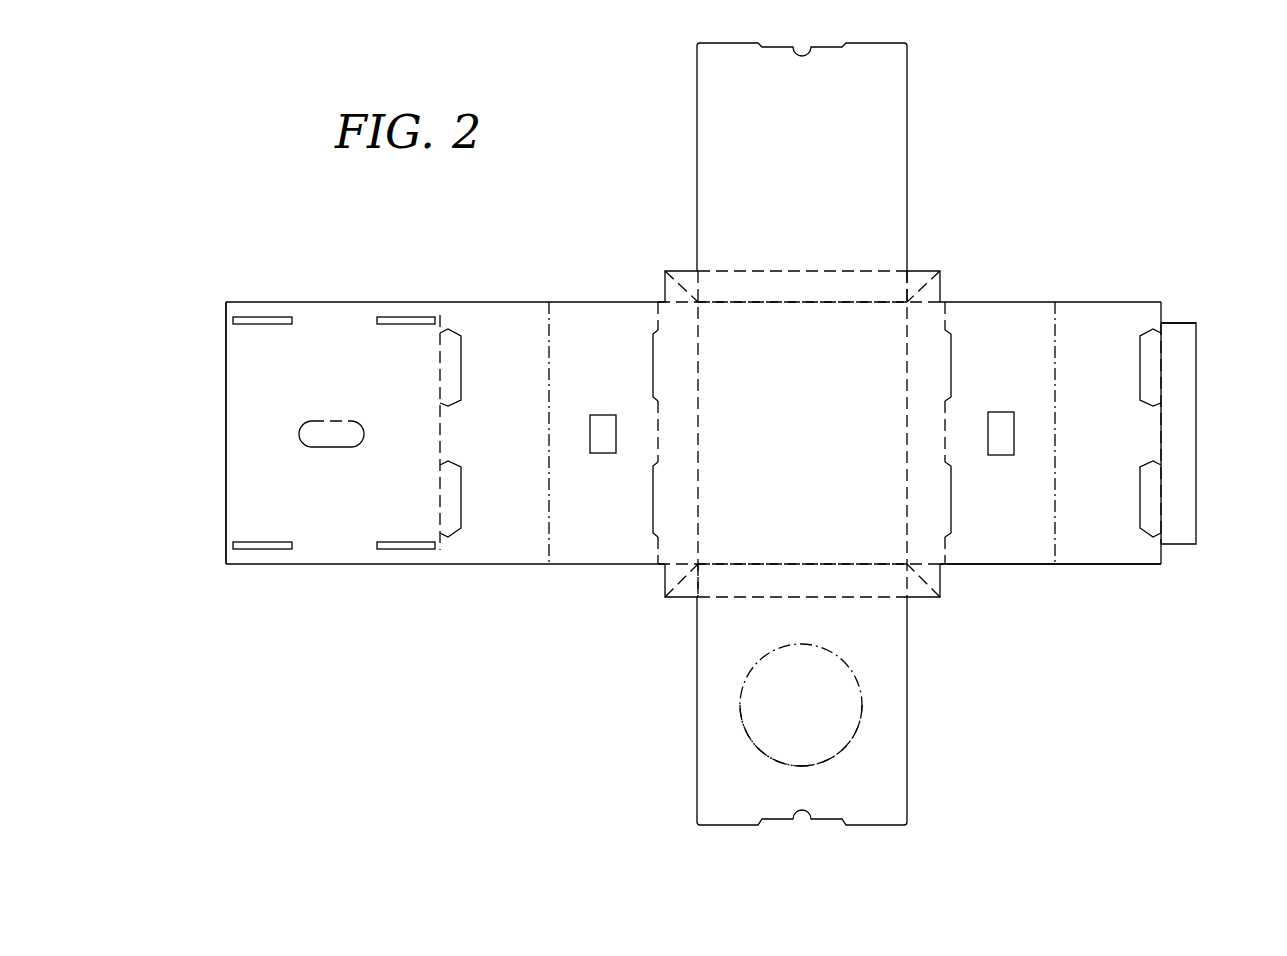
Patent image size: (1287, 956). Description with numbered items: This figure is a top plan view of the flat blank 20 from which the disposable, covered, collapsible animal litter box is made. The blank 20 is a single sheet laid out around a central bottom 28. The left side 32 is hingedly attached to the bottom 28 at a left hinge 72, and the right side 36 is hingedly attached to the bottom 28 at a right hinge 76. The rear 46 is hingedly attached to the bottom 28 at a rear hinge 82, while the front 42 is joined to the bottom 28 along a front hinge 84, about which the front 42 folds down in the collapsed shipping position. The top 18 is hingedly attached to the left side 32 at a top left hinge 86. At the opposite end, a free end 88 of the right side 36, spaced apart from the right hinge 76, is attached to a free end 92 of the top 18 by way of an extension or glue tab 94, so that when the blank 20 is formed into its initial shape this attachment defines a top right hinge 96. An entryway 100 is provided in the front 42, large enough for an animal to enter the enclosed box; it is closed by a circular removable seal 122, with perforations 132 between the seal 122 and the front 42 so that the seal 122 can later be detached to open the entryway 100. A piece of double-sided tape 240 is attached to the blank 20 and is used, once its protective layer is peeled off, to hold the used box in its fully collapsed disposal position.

The blank 20 is at (1072, 633).
The top 18 is at (272, 370).
The left side 32 is at (617, 330).
The right side 36 is at (1078, 330).
The bottom 28 is at (872, 533).
The rear 46 is at (882, 148).
The front 42 is at (722, 745).
The left hinge 72 is at (658, 538).
The right hinge 76 is at (907, 340).
The rear hinge 82 is at (773, 307).
The front hinge 84 is at (813, 593).
The top left hinge 86 is at (440, 444).
The top right hinge 96 is at (1161, 433).
The free end of the right side 88 is at (1172, 314).
The glue tab 94 is at (1185, 497).
The free end of the top 92 is at (226, 480).
The double-sided tape 240 is at (603, 408).
The perforations 132 is at (863, 698).
The removable seal 122 is at (826, 735).
The entryway 100 is at (764, 743).